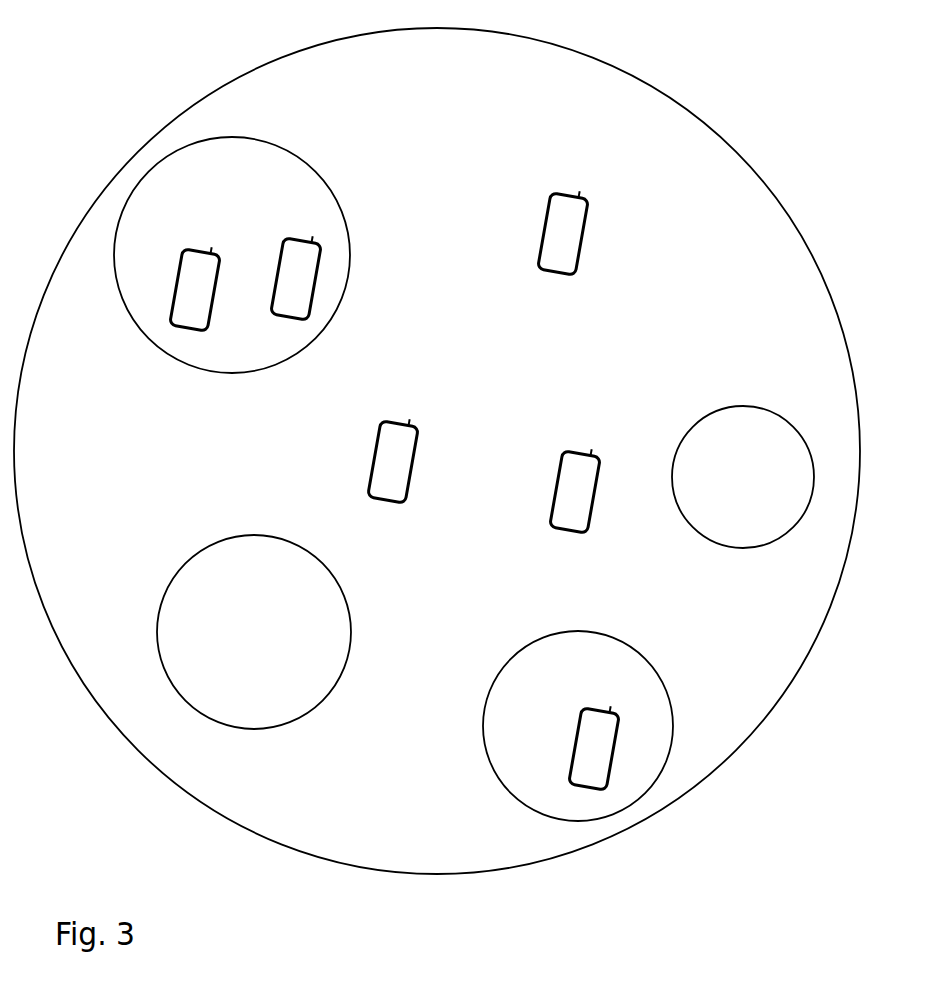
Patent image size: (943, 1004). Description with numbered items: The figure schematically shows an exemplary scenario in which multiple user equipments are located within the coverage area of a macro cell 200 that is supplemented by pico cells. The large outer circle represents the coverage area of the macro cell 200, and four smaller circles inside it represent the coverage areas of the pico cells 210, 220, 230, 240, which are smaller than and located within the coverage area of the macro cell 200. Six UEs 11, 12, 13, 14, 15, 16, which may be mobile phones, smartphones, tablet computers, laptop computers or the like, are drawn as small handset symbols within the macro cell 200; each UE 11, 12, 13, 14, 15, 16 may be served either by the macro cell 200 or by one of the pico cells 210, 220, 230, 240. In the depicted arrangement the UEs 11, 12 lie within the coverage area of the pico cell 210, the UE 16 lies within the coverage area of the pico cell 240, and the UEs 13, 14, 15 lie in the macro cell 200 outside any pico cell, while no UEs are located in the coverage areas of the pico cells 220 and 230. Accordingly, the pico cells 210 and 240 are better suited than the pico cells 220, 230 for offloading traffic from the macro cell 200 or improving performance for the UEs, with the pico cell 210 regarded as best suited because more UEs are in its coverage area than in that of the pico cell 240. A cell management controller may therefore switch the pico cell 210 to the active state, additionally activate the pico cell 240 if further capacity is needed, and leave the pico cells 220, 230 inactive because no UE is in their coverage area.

The macro cell 200 is at (261, 65).
The pico cell 210 is at (304, 152).
The pico cell 220 is at (692, 420).
The pico cell 230 is at (190, 558).
The pico cell 240 is at (512, 650).
The UE 11 is at (181, 255).
The UE 12 is at (280, 242).
The UE 13 is at (548, 197).
The UE 14 is at (377, 424).
The UE 15 is at (557, 454).
The UE 16 is at (578, 709).